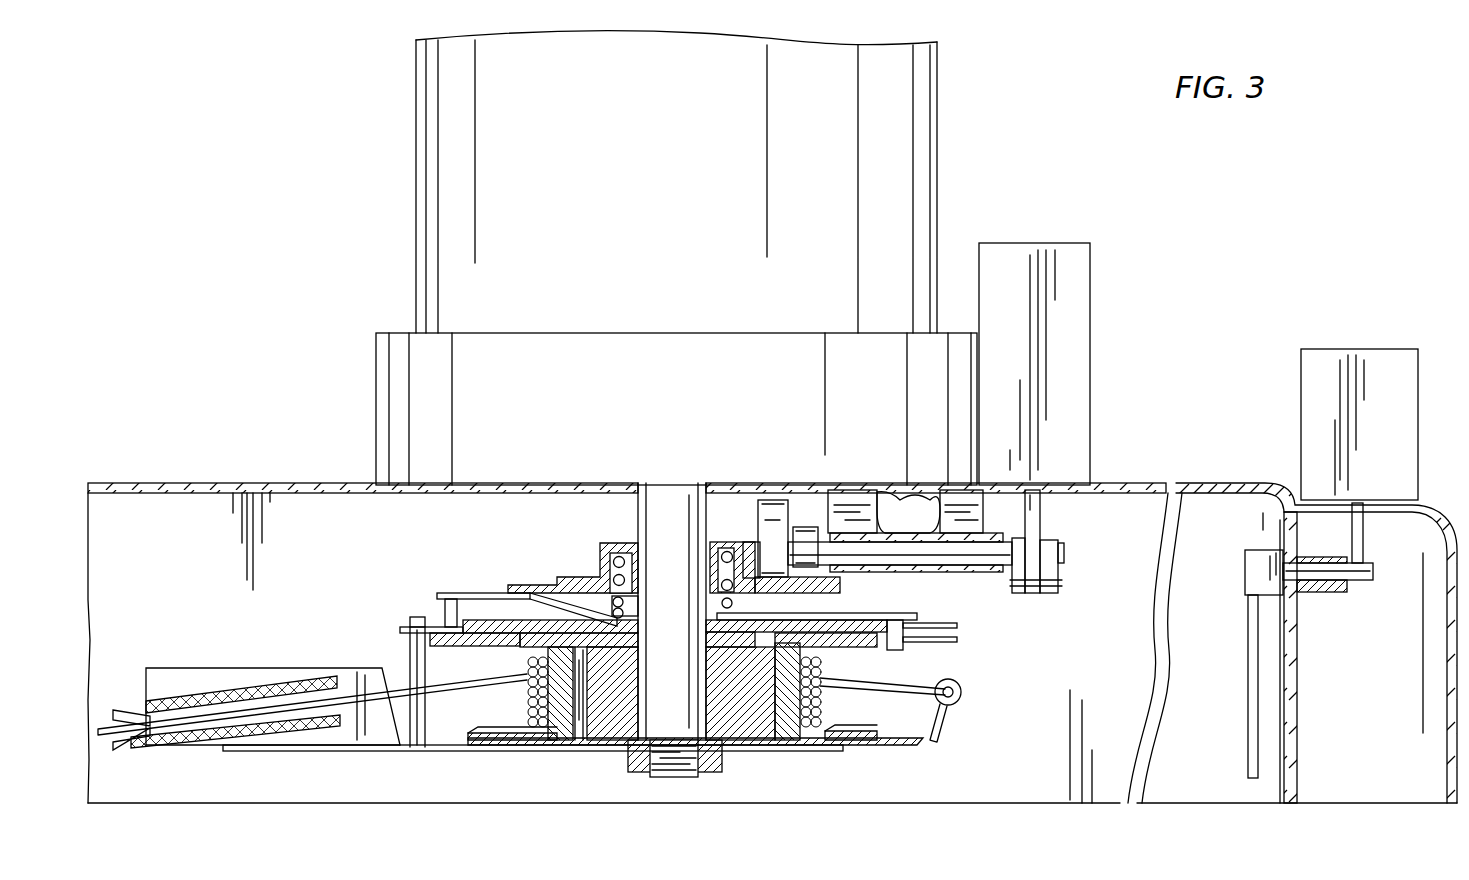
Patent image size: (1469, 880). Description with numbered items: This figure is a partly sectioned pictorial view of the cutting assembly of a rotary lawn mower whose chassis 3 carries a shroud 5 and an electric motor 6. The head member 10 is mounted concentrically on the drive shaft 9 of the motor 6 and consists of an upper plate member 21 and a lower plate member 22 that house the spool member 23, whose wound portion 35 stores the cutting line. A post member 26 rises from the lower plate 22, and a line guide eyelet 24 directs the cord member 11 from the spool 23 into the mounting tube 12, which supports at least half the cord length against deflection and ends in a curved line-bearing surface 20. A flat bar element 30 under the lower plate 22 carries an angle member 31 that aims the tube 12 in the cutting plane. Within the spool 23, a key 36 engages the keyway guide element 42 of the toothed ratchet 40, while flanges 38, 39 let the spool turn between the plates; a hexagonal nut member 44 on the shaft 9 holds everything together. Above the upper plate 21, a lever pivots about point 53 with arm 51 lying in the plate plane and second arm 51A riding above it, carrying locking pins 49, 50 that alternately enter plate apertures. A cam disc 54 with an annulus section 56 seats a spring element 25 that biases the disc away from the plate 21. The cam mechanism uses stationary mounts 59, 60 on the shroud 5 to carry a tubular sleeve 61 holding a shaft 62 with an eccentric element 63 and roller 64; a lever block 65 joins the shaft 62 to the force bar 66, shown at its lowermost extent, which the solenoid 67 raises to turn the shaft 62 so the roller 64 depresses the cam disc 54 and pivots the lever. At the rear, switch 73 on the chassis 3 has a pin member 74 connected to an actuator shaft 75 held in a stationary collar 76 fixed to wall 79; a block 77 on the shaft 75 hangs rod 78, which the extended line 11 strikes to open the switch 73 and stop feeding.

The chassis 3 is at (1440, 525).
The shroud 5 is at (150, 483).
The electric motor 6 is at (424, 142).
The drive shaft 9 is at (637, 513).
The head member 10 is at (339, 533).
The cord member 11 is at (95, 733).
The mounting tube 12 is at (143, 748).
The curvilinear line-bearing surface 20 is at (112, 748).
The upper plate member 21 is at (493, 620).
The lower plate member 22 is at (908, 745).
The spool member 23 is at (793, 742).
The line guide eyelet 24 is at (962, 697).
The spring element 25 is at (728, 560).
The post member 26 is at (410, 643).
The flat bar element 30 is at (297, 752).
The angle member 31 is at (215, 668).
The wound portion 35 is at (527, 705).
The key 36 is at (580, 732).
The flange 38 is at (493, 653).
The flange 39 is at (863, 731).
The toothed ratchet 40 is at (957, 639).
The keyway guide element 42 is at (608, 722).
The hexagonal nut member 44 is at (715, 777).
The locking pin 49 is at (440, 607).
The locking pin 50 is at (897, 650).
The arm 51 is at (897, 610).
The second arm 51A is at (448, 592).
The point of intersection 53 is at (633, 631).
The cam disc 54 is at (570, 577).
The annulus section 56 is at (752, 542).
The stationary mount 59 is at (850, 495).
The stationary mount 60 is at (950, 497).
The tubular sleeve 61 is at (905, 533).
The shaft 62 is at (983, 553).
The eccentric element 63 is at (803, 527).
The roller 64 is at (770, 500).
The lever block 65 is at (1050, 570).
The force bar 66 is at (1043, 513).
The solenoid 67 is at (1092, 275).
The switch 73 is at (1358, 349).
The pin member 74 is at (1383, 540).
The actuator shaft 75 is at (1375, 572).
The stationary collar 76 is at (1327, 593).
The block 77 is at (1245, 570).
The rod 78 is at (1248, 709).
The wall 79 is at (1297, 730).